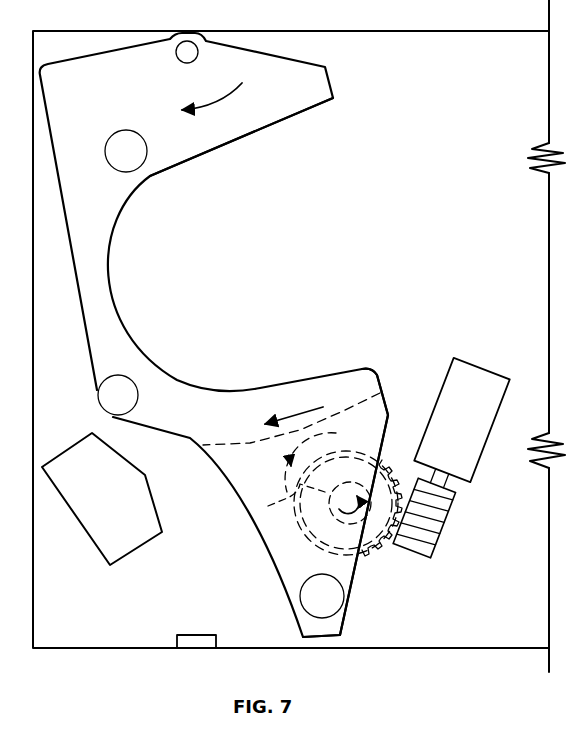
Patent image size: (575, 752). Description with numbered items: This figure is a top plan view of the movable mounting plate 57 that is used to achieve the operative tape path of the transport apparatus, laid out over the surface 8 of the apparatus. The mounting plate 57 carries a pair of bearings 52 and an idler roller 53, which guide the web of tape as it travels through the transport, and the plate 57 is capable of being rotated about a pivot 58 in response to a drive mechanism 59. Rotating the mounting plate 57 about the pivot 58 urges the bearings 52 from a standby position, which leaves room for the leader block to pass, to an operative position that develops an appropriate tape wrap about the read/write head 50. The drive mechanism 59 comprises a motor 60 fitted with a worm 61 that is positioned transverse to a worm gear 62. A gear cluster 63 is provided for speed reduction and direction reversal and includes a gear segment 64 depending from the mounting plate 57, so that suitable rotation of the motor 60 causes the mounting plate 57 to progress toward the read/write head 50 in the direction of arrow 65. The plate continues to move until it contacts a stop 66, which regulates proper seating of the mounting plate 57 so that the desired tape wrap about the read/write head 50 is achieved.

The surface 8 is at (253, 258).
The read/write head 50 is at (109, 500).
The bearings 52 is at (128, 393).
The idler roller 53 is at (131, 131).
The plate 57 is at (254, 122).
The pivot 58 is at (180, 58).
The drive mechanism 59 is at (392, 360).
The motor 60 is at (474, 438).
The worm 61 is at (442, 530).
The worm gear 62 is at (386, 555).
The gear cluster 63 is at (292, 469).
The gear segment 64 is at (343, 411).
The arrow 65 is at (302, 414).
The stop 66 is at (216, 637).